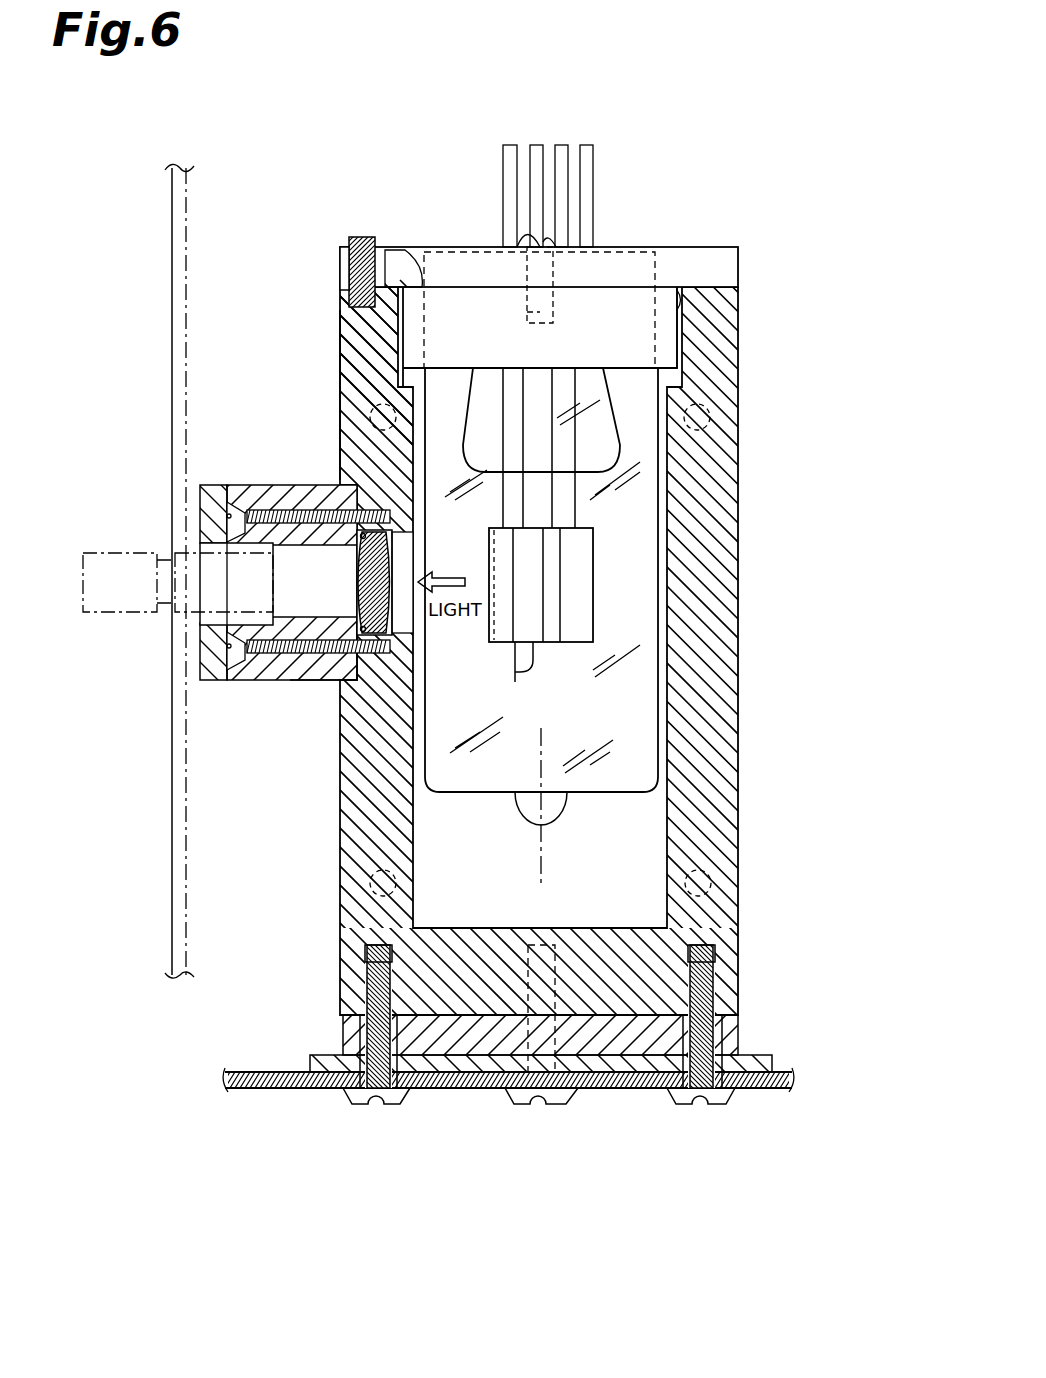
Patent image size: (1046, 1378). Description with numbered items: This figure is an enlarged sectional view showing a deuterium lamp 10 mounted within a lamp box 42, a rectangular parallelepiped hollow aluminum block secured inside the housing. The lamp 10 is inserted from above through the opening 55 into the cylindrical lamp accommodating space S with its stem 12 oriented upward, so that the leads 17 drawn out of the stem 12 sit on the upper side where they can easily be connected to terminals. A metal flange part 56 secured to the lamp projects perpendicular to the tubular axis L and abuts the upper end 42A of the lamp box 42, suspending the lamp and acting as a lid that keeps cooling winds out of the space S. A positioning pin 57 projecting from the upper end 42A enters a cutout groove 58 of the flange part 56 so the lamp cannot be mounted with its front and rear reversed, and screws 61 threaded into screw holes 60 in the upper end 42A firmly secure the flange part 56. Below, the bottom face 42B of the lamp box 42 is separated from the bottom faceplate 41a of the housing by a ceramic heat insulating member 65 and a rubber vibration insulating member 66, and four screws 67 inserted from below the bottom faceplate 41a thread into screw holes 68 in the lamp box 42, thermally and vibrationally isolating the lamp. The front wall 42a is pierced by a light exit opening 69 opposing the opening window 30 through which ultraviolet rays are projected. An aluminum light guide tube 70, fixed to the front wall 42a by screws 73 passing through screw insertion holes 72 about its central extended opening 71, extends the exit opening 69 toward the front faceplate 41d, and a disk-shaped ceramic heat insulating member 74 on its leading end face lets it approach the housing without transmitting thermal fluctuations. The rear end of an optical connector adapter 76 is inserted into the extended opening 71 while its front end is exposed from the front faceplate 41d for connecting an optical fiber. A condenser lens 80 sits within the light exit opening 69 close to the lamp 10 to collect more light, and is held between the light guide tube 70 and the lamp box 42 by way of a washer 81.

The deuterium lamp 10 is at (637, 562).
The stem 12 is at (604, 250).
The lead 17 is at (592, 156).
The opening window 30 is at (494, 560).
The bottom faceplate 41a is at (592, 1090).
The front faceplate 41d is at (172, 348).
The lamp box 42 is at (742, 712).
The front wall 42a is at (340, 345).
The upper end 42A is at (710, 285).
The bottom face 42B is at (410, 1026).
The opening 55 is at (670, 300).
The flange part 56 is at (720, 247).
The positioning pin 57 is at (360, 237).
The cutout groove 58 is at (340, 264).
The screw holes 60 is at (547, 327).
The screws 61 is at (527, 232).
The heat insulating member 65 is at (660, 1023).
The vibration insulating member 66 is at (767, 1055).
The screws 67 is at (347, 1102).
The screw hole 68 is at (367, 998).
The light exit opening 69 is at (407, 608).
The light guide tube 70 is at (254, 485).
The extended opening 71 is at (276, 662).
The screw insertion holes 72 is at (290, 682).
The screws 73 is at (314, 510).
The heat insulating member 74 is at (220, 485).
The adapter 76 is at (116, 605).
The condenser lens 80 is at (360, 580).
The washer 81 is at (346, 682).
The tubular axis L is at (541, 864).
The lamp accommodating space S is at (629, 871).